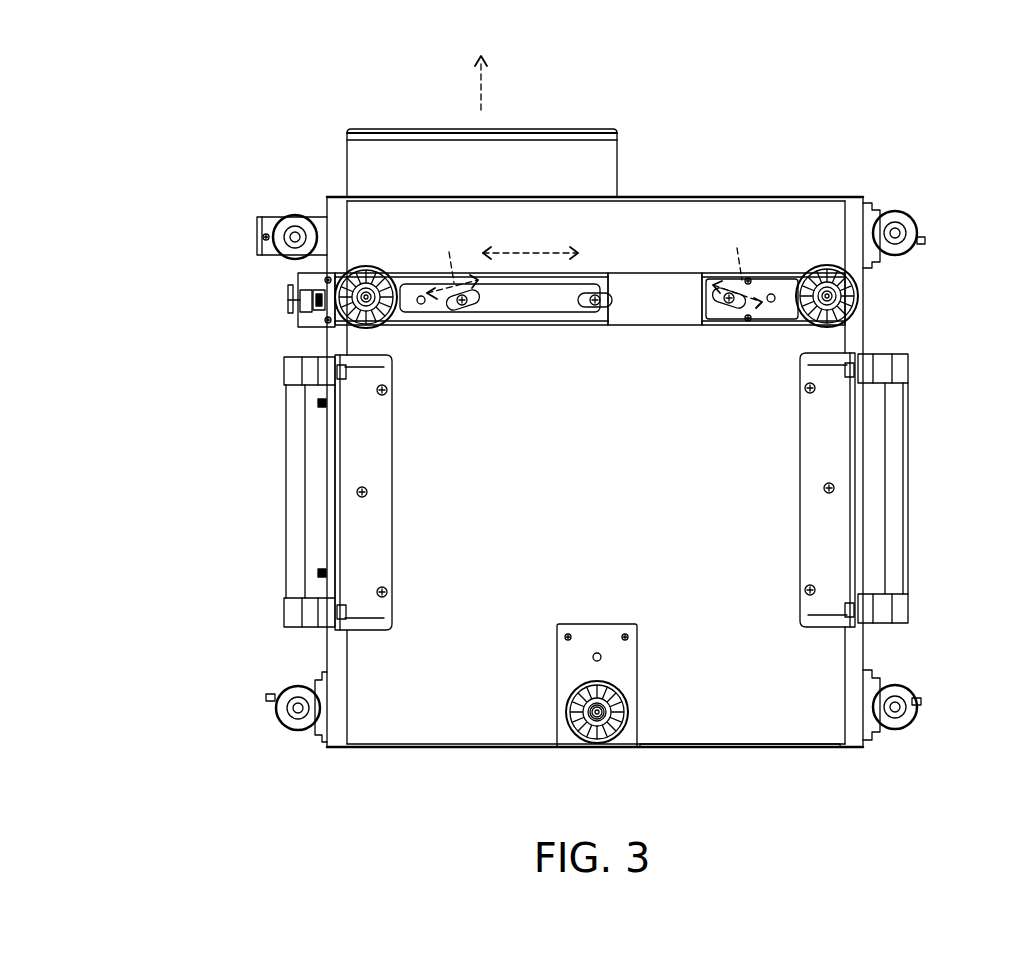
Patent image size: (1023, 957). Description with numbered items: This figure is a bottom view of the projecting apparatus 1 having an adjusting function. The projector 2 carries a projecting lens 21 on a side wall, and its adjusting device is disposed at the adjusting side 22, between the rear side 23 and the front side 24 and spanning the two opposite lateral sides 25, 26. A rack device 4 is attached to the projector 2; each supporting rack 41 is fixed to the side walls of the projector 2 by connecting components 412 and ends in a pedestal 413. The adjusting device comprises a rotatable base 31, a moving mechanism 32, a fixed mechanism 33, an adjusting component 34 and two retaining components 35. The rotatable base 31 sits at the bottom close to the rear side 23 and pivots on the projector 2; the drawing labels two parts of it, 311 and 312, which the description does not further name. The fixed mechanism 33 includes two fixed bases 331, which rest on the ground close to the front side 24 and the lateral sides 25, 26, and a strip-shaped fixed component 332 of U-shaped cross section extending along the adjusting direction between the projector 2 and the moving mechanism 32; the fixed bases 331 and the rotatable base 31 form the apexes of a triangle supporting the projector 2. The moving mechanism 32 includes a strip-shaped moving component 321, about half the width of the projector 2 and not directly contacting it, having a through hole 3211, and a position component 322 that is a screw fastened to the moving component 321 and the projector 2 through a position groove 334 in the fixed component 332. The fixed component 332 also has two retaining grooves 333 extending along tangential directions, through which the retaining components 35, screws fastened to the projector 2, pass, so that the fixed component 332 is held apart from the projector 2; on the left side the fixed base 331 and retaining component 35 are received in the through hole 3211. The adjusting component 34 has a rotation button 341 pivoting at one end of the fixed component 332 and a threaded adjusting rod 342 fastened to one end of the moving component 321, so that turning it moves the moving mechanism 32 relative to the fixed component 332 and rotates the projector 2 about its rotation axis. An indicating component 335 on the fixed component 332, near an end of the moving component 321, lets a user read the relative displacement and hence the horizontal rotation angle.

The projecting apparatus 1 is at (1006, 100).
The projector 2 is at (815, 752).
The projecting lens 21 is at (617, 168).
The adjusting side 22 is at (743, 730).
The rear side 23 is at (427, 748).
The front side 24 is at (813, 197).
The lateral side 25 is at (855, 337).
The lateral side 26 is at (327, 342).
The rack device 4 is at (934, 222).
The supporting rack 41 is at (262, 188).
The connecting component 412 is at (320, 215).
The pedestal 413 is at (295, 215).
The rotatable base 31 is at (722, 648).
The motor shaft 311 is at (612, 712).
The drive gear 312 is at (612, 692).
The moving mechanism 32 is at (497, 394).
The moving component 321 is at (525, 325).
The through hole 3211 is at (492, 312).
The position component 322 is at (592, 322).
The fixed mechanism 33 is at (312, 333).
The fixed base 331 is at (375, 265).
The fixed component 332 is at (661, 325).
The retaining groove 333 is at (441, 318).
The position groove 334 is at (612, 298).
The indicating component 335 is at (307, 313).
The adjusting component 34 is at (160, 240).
The rotation button 341 is at (290, 292).
The adjusting rod 342 is at (312, 301).
The retaining component 35 is at (462, 306).